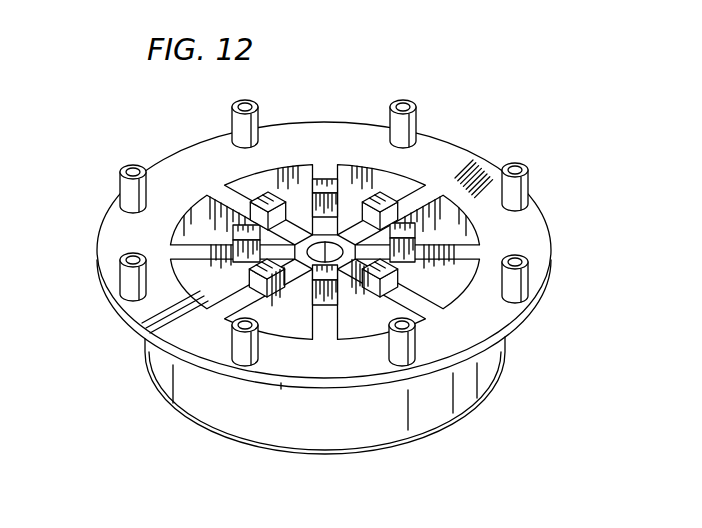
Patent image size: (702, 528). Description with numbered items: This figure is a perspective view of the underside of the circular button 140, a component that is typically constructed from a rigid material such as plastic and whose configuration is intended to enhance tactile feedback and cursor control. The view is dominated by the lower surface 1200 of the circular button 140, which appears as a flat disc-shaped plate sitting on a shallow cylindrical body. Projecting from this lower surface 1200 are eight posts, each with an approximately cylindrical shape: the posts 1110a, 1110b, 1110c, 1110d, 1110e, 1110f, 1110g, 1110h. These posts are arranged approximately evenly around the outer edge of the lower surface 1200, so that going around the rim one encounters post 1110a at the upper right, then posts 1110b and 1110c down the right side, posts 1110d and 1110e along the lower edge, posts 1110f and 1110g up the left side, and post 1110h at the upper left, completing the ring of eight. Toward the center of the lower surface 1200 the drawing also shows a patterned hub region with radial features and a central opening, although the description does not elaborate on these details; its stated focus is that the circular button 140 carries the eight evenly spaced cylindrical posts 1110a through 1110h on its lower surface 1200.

The circular button 140 is at (328, 263).
The lower surface 1200 is at (323, 129).
The post 1110a is at (417, 117).
The post 1110b is at (528, 178).
The post 1110c is at (528, 277).
The post 1110d is at (415, 345).
The post 1110e is at (238, 350).
The post 1110f is at (126, 283).
The post 1110g is at (120, 182).
The post 1110h is at (232, 115).